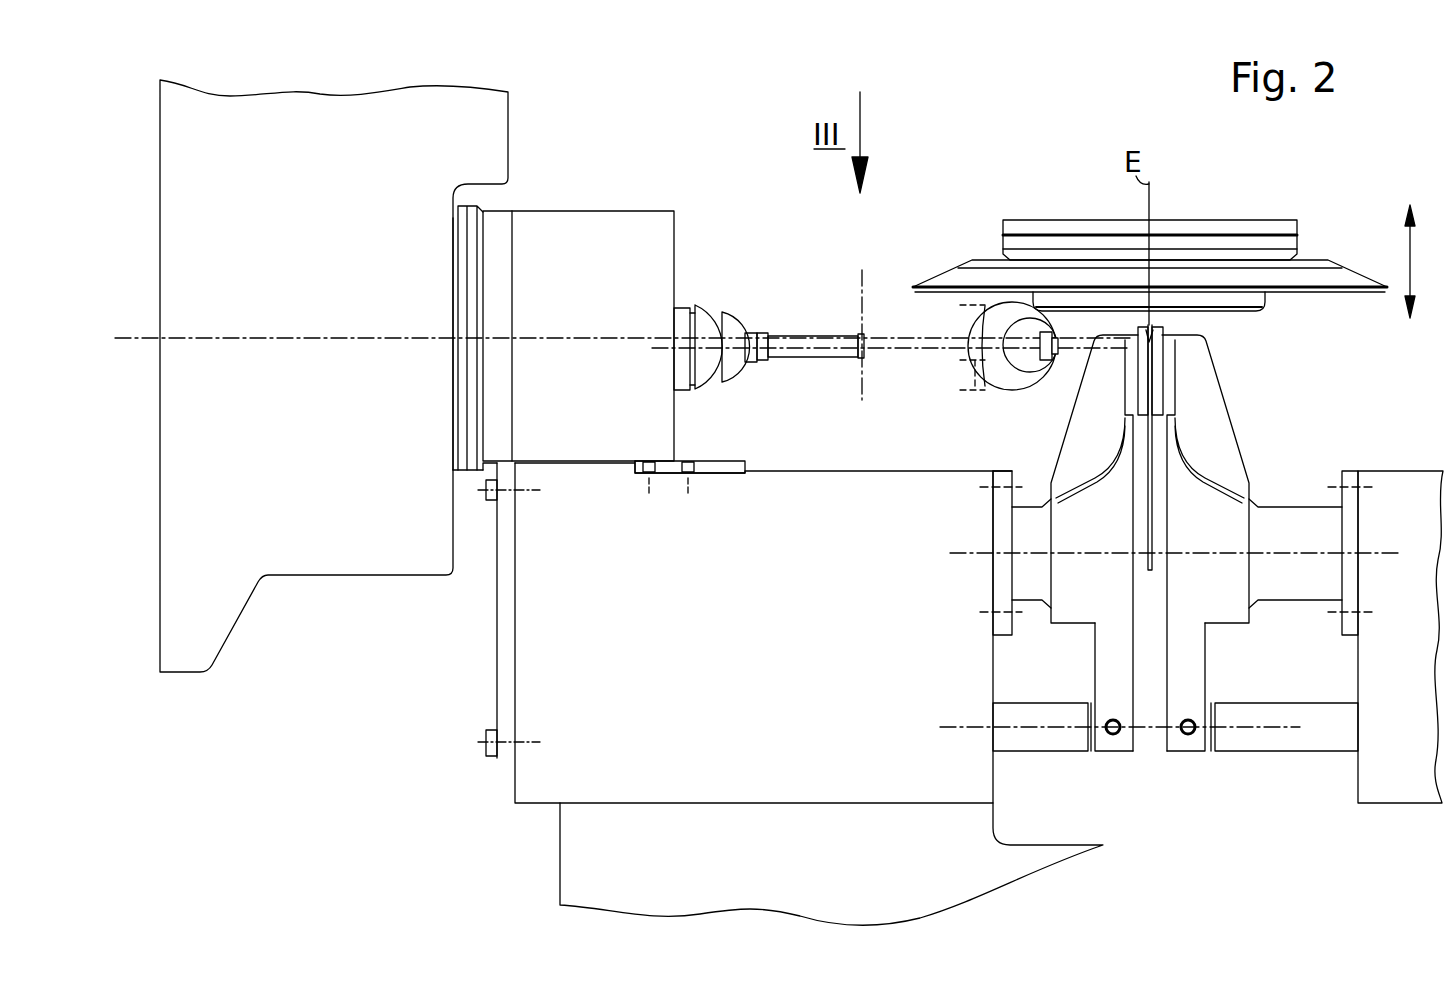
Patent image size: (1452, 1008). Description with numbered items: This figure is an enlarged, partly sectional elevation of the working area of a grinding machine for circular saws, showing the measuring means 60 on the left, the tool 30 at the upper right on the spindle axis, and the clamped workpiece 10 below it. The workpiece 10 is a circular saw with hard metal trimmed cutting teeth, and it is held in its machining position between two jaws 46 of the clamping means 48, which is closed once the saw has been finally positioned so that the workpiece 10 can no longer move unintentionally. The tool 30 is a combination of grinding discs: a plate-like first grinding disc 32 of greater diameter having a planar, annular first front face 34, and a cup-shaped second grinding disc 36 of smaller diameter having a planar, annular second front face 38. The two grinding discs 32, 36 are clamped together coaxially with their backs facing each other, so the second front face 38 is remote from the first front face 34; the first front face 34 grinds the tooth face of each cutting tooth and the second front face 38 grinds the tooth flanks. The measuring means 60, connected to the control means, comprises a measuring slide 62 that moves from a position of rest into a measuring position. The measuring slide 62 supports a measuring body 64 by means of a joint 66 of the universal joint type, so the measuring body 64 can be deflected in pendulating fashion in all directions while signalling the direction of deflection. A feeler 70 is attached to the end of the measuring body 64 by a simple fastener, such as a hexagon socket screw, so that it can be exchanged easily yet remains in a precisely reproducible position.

The workpiece 10 is at (1160, 498).
The tool 30 is at (1142, 251).
The first grinding disc 32 is at (940, 281).
The first front face 34 is at (1300, 296).
The second grinding disc 36 is at (1006, 228).
The second front face 38 is at (1276, 212).
The jaws 46 is at (1210, 394).
The clamping means 48 is at (1189, 826).
The measuring means 60 is at (693, 138).
The measuring slide 62 is at (608, 215).
The measuring body 64 is at (815, 345).
The joint 66 is at (743, 331).
The feeler 70 is at (865, 357).